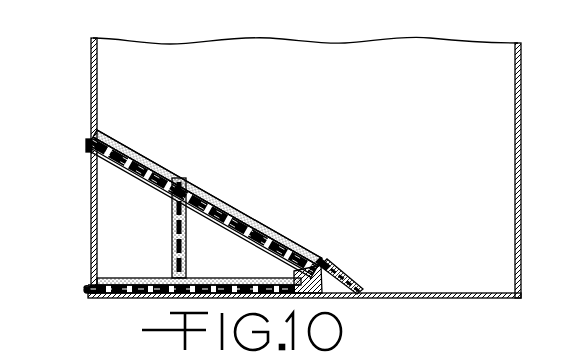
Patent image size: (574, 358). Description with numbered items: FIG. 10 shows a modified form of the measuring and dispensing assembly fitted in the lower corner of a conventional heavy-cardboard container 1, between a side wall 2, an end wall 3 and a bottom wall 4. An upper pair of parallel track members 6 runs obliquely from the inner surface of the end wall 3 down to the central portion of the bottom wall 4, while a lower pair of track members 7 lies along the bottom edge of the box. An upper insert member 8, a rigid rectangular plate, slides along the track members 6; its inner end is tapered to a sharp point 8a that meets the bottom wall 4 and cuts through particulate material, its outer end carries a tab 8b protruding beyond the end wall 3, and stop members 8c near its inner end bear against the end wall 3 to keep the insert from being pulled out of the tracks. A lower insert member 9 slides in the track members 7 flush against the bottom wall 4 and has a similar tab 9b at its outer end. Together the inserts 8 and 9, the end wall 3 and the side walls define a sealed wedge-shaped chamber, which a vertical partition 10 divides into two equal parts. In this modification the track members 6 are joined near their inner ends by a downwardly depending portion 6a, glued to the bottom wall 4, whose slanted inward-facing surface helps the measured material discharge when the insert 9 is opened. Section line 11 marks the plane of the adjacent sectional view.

The container 1 is at (354, 36).
The side wall 2 is at (518, 170).
The end wall 3 is at (91, 103).
The bottom wall 4 is at (450, 300).
The upper track members 6 is at (233, 203).
The downwardly depending portion 6a is at (320, 295).
The lower track members 7 is at (228, 279).
The upper insert member 8 is at (268, 234).
The sharp point 8a is at (360, 292).
The tab 8b is at (86, 148).
The stop members 8c is at (330, 264).
The lower insert member 9 is at (143, 296).
The tab 9b is at (92, 296).
The partition 10 is at (176, 213).
The section line 11- 11 is at (57, 323).